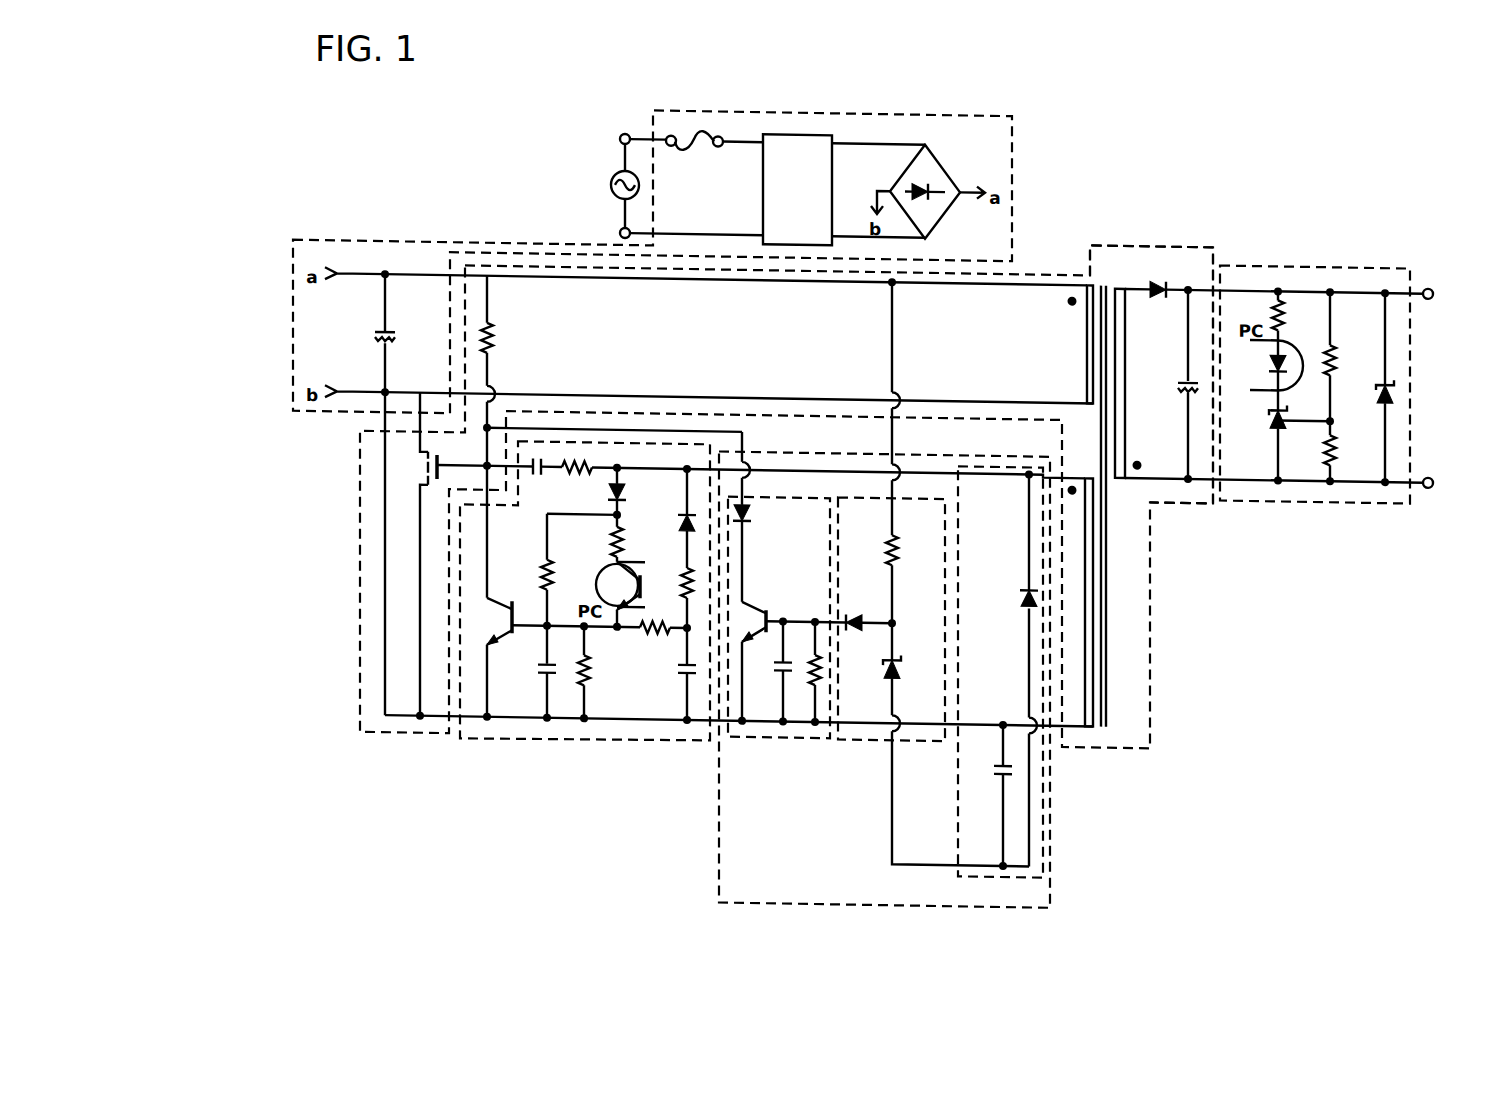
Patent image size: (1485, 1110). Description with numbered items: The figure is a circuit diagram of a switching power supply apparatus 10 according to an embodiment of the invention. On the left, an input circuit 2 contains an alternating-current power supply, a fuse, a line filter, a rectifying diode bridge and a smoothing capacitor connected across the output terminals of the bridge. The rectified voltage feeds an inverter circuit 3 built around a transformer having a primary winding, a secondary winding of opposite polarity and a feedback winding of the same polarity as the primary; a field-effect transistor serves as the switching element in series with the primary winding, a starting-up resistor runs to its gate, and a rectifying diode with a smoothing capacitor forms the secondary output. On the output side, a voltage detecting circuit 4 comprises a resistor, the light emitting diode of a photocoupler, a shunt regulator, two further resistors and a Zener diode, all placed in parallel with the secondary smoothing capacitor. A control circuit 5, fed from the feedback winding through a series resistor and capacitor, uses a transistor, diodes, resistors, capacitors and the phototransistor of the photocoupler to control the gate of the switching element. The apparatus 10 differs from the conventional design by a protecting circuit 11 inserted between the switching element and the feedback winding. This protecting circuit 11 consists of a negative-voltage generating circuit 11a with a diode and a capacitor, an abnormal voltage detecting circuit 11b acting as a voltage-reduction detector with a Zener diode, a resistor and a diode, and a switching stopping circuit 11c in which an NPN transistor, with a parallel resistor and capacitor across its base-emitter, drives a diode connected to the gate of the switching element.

The input circuit 2 is at (831, 95).
The inverter circuit 3 is at (1166, 226).
The voltage detecting circuit 4 is at (1308, 244).
The control circuit 5 is at (548, 760).
The switching power supply apparatus 10 is at (1049, 182).
The protecting circuit 11 is at (868, 920).
The negative-voltage generating circuit 11a is at (976, 889).
The abnormal voltage detecting circuit 11b is at (843, 755).
The switching stopping circuit 11c is at (760, 757).